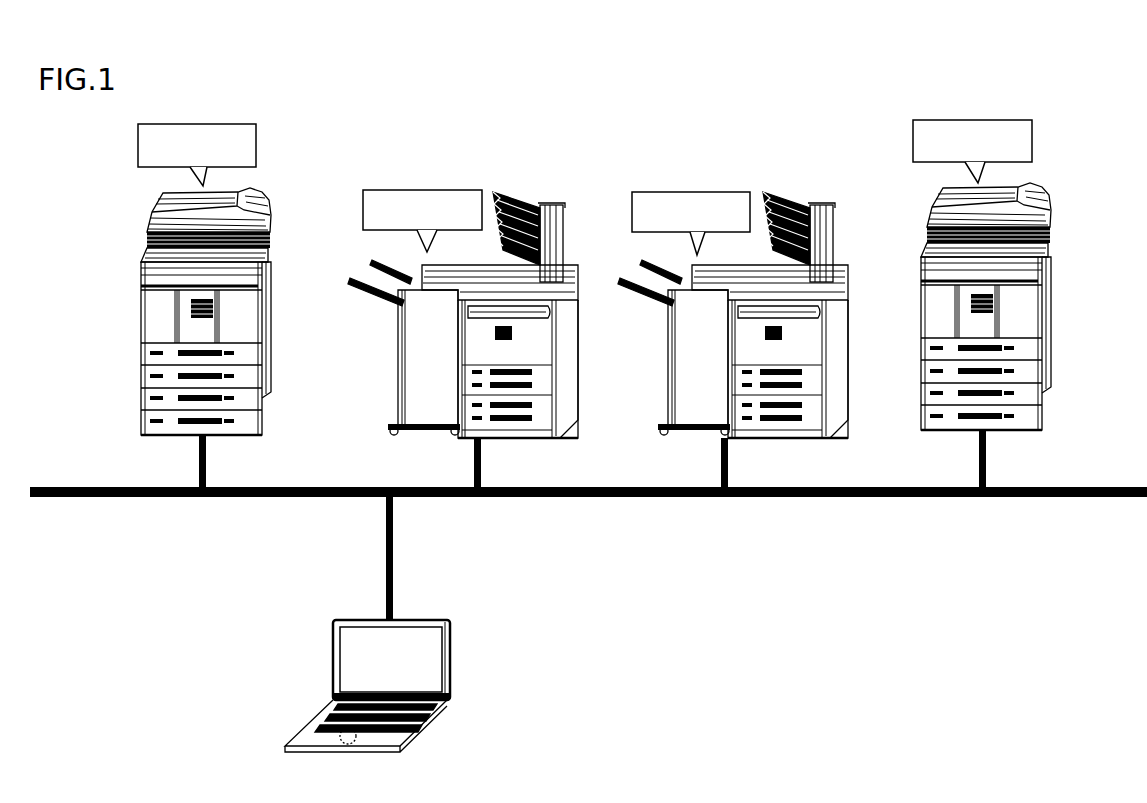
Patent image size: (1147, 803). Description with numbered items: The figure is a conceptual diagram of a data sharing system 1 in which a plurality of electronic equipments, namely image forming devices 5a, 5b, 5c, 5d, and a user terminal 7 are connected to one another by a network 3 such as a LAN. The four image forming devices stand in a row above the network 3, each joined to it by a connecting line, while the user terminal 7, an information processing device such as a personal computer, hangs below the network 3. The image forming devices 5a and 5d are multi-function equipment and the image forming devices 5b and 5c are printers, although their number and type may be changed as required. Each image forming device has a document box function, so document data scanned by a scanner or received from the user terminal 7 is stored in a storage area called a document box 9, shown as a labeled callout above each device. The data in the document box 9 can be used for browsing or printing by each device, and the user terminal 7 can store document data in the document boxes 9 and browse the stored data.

The data sharing system 1 is at (1081, 97).
The network 3 is at (777, 498).
The image forming device 5a is at (273, 209).
The image forming device 5b is at (573, 205).
The image forming device 5c is at (841, 200).
The image forming device 5d is at (1054, 200).
The user terminal 7 is at (473, 635).
The document box 9 is at (214, 127).